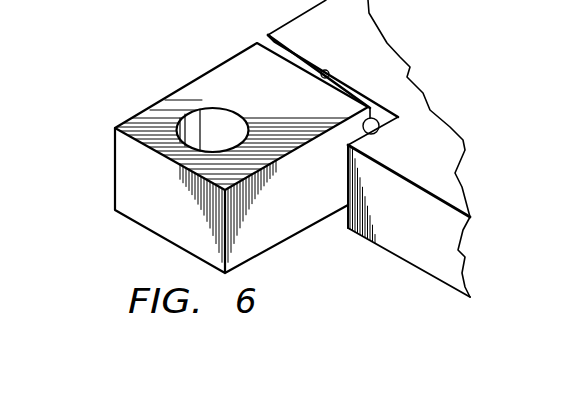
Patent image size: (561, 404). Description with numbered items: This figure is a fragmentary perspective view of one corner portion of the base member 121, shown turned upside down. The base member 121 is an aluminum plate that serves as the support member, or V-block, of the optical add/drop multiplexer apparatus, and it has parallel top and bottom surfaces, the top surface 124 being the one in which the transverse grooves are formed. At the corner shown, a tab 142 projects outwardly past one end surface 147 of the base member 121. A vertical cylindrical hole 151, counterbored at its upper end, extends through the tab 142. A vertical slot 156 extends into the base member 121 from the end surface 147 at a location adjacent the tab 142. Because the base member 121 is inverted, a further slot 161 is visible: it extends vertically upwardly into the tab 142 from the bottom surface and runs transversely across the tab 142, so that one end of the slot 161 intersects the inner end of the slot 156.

The base member 121 is at (402, 55).
The top surface 124 is at (430, 274).
The tab 142 is at (122, 168).
The end surface 147 is at (395, 242).
The cylindrical hole 151 is at (230, 120).
The vertical slot 156 is at (379, 130).
The slot 161 is at (329, 71).